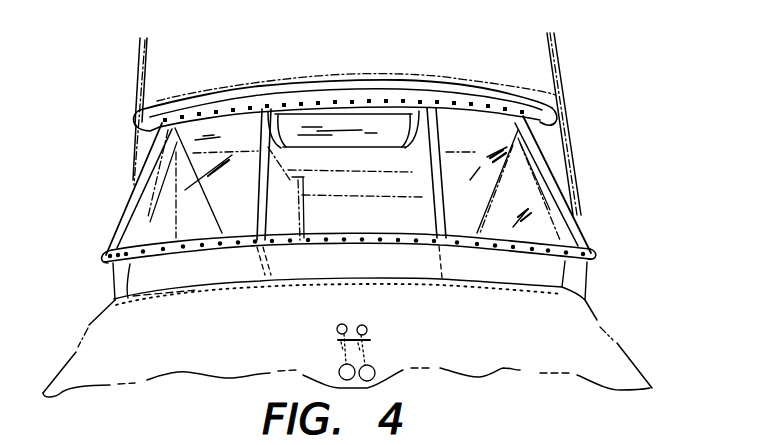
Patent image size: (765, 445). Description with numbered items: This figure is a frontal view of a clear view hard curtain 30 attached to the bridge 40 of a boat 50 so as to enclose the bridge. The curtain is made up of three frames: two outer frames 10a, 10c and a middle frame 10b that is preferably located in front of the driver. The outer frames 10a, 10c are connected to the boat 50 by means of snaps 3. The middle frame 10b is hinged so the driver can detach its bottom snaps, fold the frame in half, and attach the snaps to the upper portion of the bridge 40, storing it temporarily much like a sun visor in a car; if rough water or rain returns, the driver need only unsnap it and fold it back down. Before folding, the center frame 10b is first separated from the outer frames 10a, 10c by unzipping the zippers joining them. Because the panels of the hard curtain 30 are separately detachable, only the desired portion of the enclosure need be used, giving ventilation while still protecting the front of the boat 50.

The bridge 40 is at (501, 91).
The clear view hard curtain 30 is at (528, 192).
The outer frame 10a is at (455, 134).
The middle frame 10b is at (357, 133).
The outer frame 10c is at (221, 137).
The snaps 3 is at (126, 259).
The boat 50 is at (190, 347).